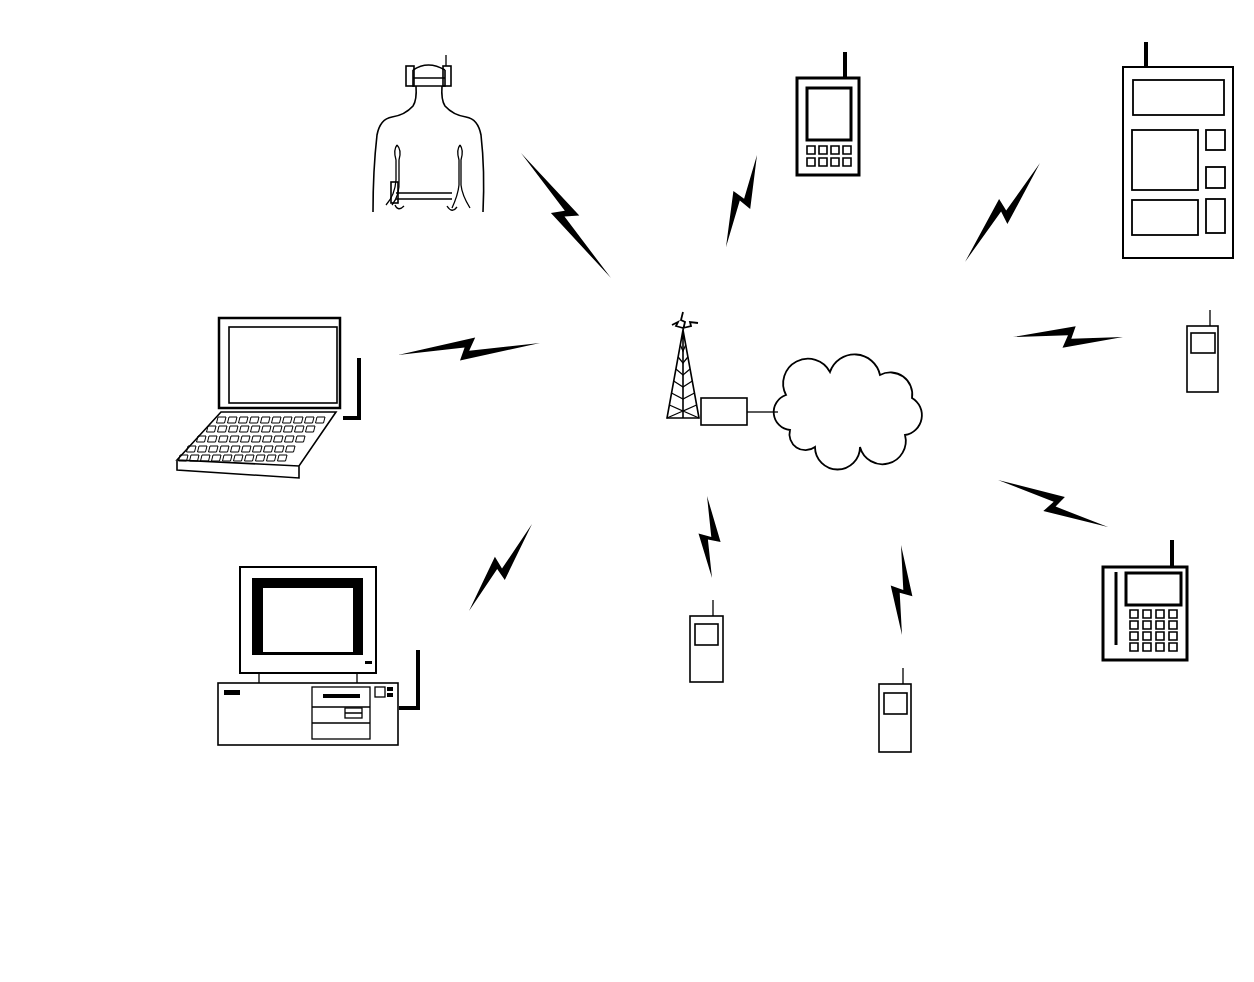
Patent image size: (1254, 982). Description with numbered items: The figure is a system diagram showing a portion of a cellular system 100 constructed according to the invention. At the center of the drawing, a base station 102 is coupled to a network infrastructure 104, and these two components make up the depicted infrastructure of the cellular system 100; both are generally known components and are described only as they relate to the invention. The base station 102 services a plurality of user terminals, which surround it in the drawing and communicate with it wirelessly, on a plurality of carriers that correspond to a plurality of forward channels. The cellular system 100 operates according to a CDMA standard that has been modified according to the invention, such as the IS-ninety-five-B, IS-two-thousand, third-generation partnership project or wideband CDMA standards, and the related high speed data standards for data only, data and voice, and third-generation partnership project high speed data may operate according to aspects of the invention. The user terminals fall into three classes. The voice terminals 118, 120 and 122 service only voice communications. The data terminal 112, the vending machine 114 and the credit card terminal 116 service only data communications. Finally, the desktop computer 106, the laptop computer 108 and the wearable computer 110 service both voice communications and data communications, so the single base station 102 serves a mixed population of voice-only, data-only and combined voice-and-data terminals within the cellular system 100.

The cellular system 100 is at (566, 791).
The base station 102 is at (683, 421).
The network infrastructure 104 is at (873, 367).
The desktop computer 106 is at (378, 622).
The laptop computer 108 is at (258, 318).
The wearable computer 110 is at (394, 205).
The data terminal 112 is at (862, 139).
The vending machine 114 is at (1122, 98).
The credit card terminal 116 is at (1189, 623).
The voice terminal 118 is at (690, 664).
The voice terminal 120 is at (878, 734).
The voice terminal 122 is at (1186, 374).